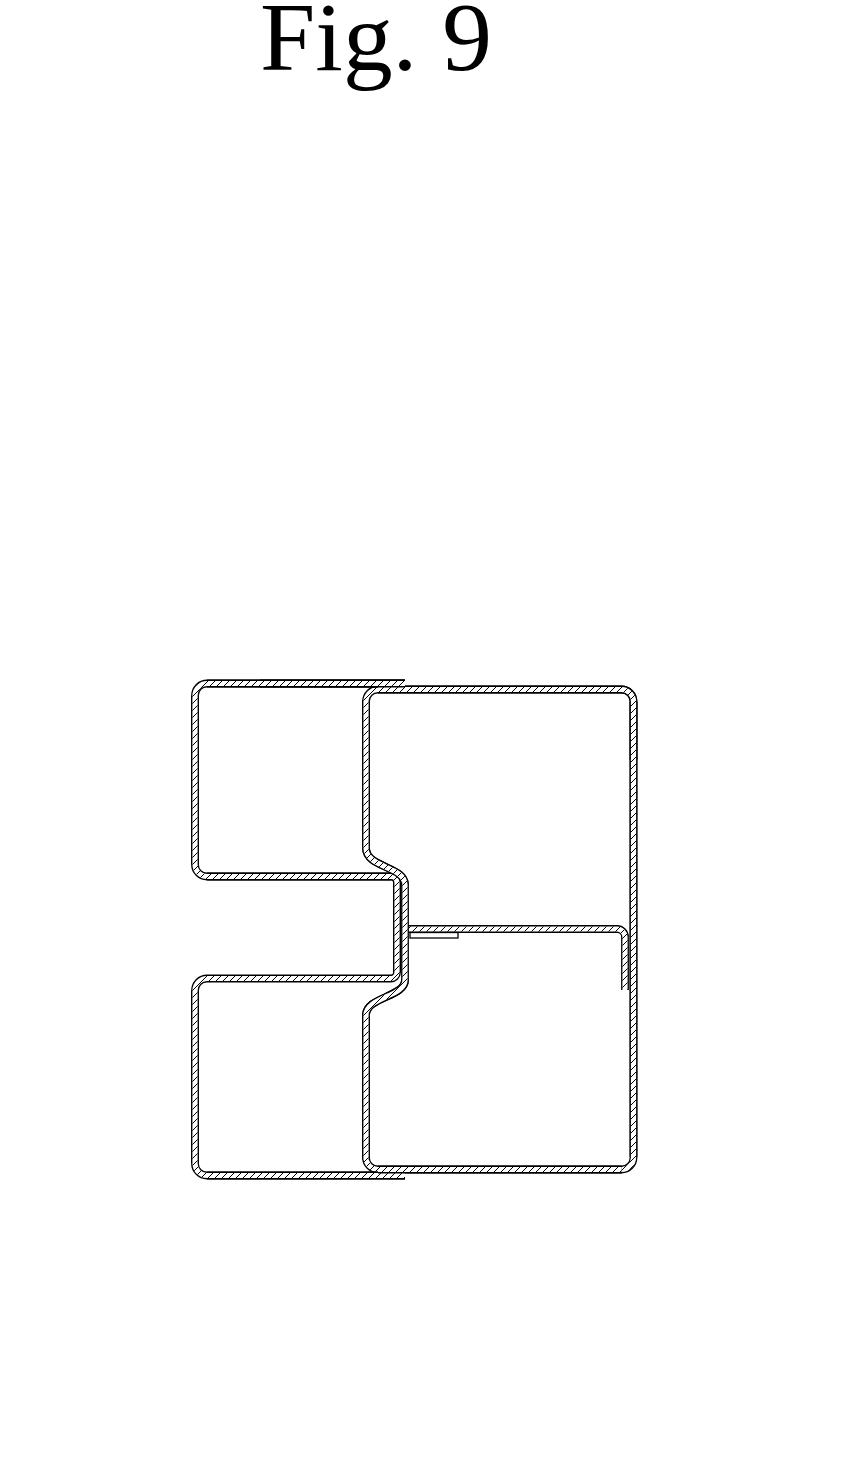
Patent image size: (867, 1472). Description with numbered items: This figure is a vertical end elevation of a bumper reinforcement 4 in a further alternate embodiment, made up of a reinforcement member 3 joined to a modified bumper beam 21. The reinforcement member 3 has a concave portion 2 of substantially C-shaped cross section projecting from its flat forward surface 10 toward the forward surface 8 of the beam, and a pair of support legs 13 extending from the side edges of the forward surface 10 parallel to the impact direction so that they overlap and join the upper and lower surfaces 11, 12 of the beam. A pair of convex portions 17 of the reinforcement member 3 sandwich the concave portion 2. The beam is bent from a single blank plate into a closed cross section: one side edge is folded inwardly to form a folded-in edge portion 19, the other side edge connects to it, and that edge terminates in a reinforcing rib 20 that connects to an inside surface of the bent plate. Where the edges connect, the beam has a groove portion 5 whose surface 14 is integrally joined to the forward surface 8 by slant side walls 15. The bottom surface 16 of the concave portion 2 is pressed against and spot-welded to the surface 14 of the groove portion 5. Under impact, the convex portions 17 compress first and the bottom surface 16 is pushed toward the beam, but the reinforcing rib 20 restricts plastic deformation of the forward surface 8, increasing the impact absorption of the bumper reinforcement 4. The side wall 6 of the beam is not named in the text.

The concave portion 2 is at (340, 945).
The reinforcement member 3 is at (335, 655).
The bumper reinforcement 4 is at (527, 500).
The groove portion 5 is at (430, 950).
The side wall 6 is at (637, 804).
The forward surface of the bumper beam 8 is at (362, 757).
The forward surface 10 is at (192, 793).
The upper surface 11 is at (573, 688).
The lower surface 12 is at (533, 1174).
The support legs 13 is at (268, 679).
The surface of the groove portion 14 is at (396, 877).
The slant side walls 15 is at (393, 860).
The bottom surface 16 is at (394, 922).
The convex portions 17 is at (327, 798).
The folded-in edge portion 19 is at (420, 925).
The reinforcing rib 20 is at (522, 926).
The modified bumper beam 21 is at (467, 662).